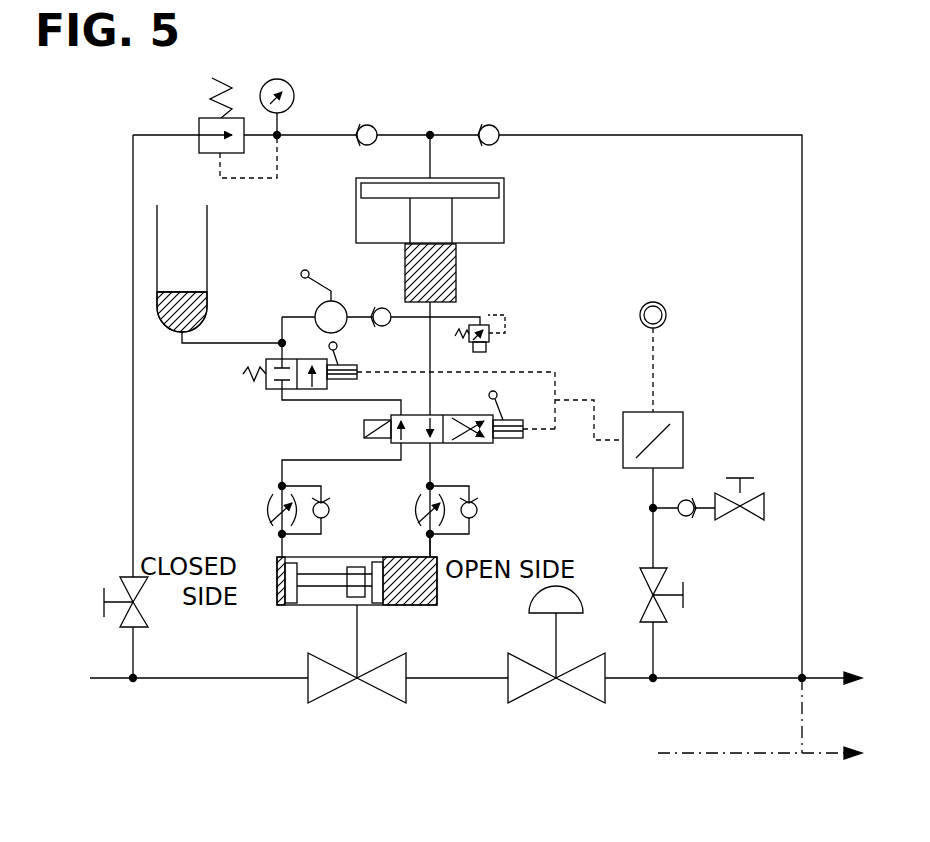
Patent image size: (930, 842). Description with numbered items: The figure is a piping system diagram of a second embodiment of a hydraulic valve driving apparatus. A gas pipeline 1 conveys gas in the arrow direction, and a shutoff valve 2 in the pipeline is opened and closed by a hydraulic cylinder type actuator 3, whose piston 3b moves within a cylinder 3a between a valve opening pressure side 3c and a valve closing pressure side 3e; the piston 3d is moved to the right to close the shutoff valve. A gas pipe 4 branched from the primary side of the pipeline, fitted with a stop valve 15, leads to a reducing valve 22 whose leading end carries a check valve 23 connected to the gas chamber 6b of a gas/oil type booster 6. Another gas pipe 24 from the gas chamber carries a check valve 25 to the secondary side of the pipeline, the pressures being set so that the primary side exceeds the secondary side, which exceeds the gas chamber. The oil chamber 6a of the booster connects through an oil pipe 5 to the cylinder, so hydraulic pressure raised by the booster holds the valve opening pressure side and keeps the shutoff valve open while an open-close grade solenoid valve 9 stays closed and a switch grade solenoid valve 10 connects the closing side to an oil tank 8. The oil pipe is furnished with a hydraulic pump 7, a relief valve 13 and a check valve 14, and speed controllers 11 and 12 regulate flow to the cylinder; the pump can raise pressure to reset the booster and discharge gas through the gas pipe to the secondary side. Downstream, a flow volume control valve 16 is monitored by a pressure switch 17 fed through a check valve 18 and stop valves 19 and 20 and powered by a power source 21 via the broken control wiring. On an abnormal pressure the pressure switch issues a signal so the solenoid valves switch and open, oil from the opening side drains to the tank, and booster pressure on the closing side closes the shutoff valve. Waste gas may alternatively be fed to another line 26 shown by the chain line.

The gas pipeline 1 is at (738, 680).
The shutoff valve 2 is at (388, 678).
The actuator 3 is at (341, 588).
The cylinder 3a is at (297, 606).
The piston 3b is at (377, 560).
The valve opening pressure side 3c is at (432, 595).
The piston 3d is at (284, 598).
The valve closing pressure side 3e is at (278, 568).
The gas pipe 4 is at (133, 205).
The oil pipe 5 is at (430, 384).
The gas/oil type booster 6 is at (447, 230).
The oil chamber 6a is at (418, 278).
The gas chamber 6b is at (503, 180).
The hydraulic pump 7 is at (318, 310).
The oil tank 8 is at (167, 255).
The open-close grade solenoid valve 9 is at (276, 391).
The switch grade solenoid valve 10 is at (502, 446).
The speed controller 11 is at (276, 483).
The speed controller 12 is at (489, 521).
The relief valve 13 is at (486, 323).
The check valve 14 is at (386, 326).
The stop valve 15 is at (130, 582).
The flow volume control valve 16 is at (594, 680).
The pressure switch 17 is at (684, 430).
The check valve 18 is at (690, 516).
The stop valve 19 is at (668, 615).
The stop valve 20 is at (757, 512).
The power source 21 is at (666, 318).
The reducing valve 22 is at (199, 140).
The check valve 23 is at (358, 123).
The gas pipe 24 is at (623, 133).
The check valve 25 is at (480, 123).
The another line 26 is at (708, 755).